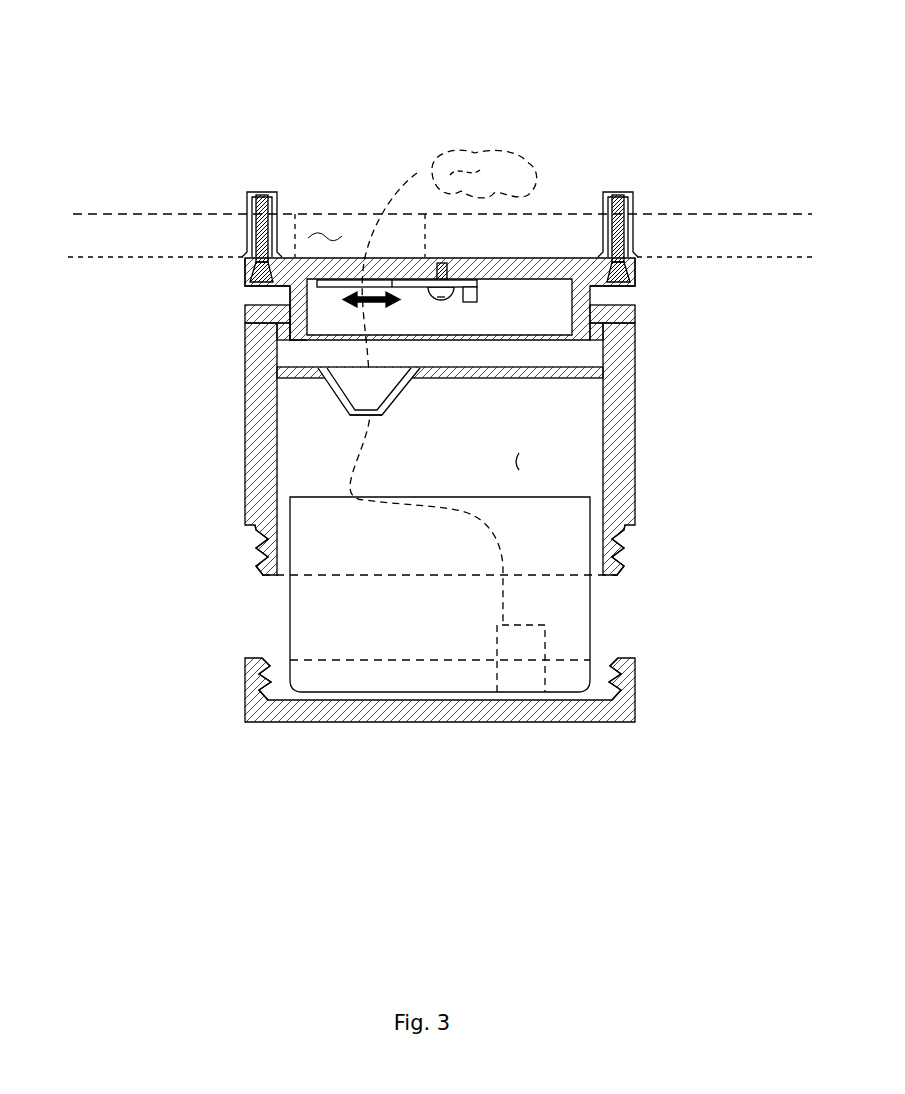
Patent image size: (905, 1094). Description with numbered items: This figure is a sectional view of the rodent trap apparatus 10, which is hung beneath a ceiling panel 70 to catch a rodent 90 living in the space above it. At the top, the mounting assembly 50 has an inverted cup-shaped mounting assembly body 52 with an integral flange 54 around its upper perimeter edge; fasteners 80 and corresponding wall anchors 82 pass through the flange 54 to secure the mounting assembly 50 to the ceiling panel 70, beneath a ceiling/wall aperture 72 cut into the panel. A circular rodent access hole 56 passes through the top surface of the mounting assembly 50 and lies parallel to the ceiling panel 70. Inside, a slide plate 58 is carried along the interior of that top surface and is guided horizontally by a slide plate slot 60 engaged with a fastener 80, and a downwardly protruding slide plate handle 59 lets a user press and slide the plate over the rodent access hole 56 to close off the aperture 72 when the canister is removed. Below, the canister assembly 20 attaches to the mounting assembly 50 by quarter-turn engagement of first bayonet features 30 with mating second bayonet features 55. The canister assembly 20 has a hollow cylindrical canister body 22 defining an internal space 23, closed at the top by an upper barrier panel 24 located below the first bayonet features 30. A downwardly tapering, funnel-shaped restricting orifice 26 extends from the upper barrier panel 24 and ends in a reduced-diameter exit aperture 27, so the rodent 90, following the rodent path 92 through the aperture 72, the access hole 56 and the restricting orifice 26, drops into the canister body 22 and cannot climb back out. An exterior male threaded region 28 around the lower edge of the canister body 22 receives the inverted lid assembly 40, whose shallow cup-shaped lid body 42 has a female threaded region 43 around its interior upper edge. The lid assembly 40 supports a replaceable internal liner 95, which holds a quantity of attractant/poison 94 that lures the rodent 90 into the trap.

The apparatus 10 is at (406, 569).
The canister assembly 20 is at (428, 456).
The canister body 22 is at (635, 415).
The internal space 23 is at (517, 462).
The upper barrier panel 24 is at (520, 370).
The restricting orifice 26 is at (267, 417).
The exit aperture 27 is at (372, 415).
The exterior male threaded region 28 is at (258, 553).
The first bayonet features 30 is at (286, 314).
The lid assembly 40 is at (415, 746).
The lid body 42 is at (578, 720).
The female threaded region 43 is at (253, 687).
The mounting assembly 50 is at (242, 283).
The mounting assembly body 52 is at (582, 296).
The flange 54 is at (245, 267).
The second bayonet features 55 is at (290, 335).
The rodent access hole 56 is at (427, 279).
The slide plate 58 is at (297, 18).
The slide plate handle 59 is at (478, 300).
The slide plate slot 60 is at (410, 288).
The ceiling panel 70 is at (147, 213).
The ceiling/wall aperture 72 is at (322, 232).
The fastener 80 is at (257, 203).
The wall anchor 82 is at (262, 193).
The rodent 90 is at (498, 165).
The rodent path 92 is at (415, 173).
The attractant/poison 94 is at (545, 633).
The internal liner 95 is at (288, 618).